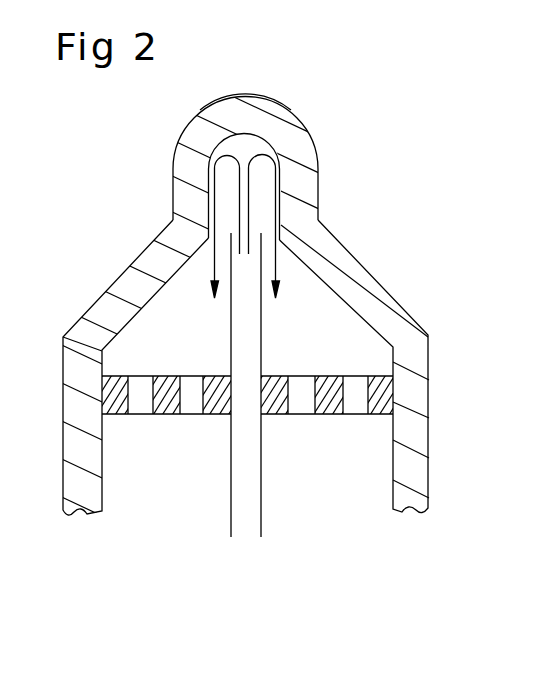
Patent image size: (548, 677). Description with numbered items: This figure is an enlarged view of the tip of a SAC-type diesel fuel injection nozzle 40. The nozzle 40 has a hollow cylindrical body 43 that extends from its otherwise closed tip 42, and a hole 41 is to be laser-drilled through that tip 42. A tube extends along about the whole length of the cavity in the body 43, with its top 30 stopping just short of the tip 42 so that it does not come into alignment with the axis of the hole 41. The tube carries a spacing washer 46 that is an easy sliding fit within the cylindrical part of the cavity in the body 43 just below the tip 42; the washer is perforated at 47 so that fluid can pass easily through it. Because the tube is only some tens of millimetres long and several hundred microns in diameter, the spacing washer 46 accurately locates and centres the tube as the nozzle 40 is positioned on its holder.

The top of the tube 30 is at (217, 232).
The diesel fuel injection nozzle 40 is at (83, 449).
The hole 41 is at (302, 145).
The tip 42 is at (227, 98).
The hollow cylindrical body 43 is at (397, 466).
The spacing washer 46 is at (330, 378).
The perforations 47 is at (131, 380).